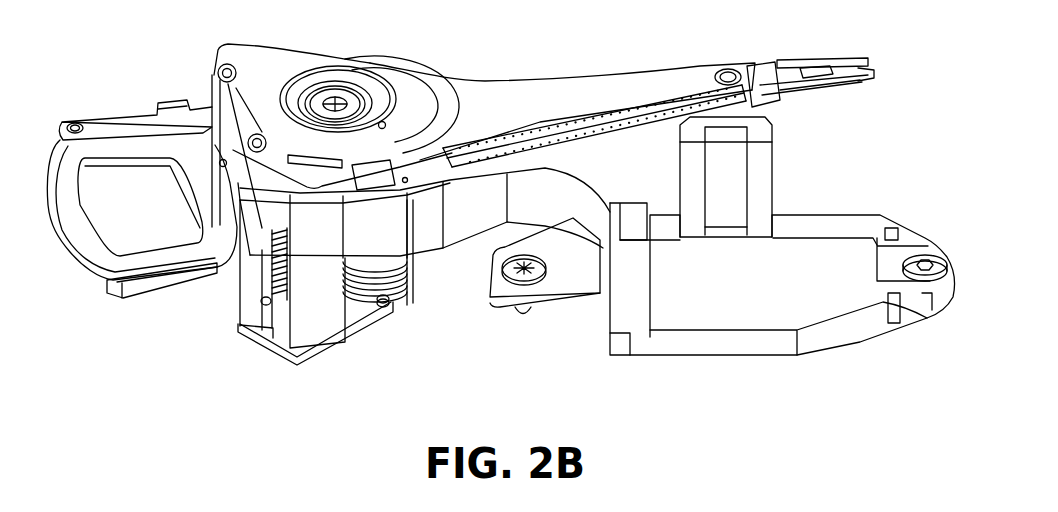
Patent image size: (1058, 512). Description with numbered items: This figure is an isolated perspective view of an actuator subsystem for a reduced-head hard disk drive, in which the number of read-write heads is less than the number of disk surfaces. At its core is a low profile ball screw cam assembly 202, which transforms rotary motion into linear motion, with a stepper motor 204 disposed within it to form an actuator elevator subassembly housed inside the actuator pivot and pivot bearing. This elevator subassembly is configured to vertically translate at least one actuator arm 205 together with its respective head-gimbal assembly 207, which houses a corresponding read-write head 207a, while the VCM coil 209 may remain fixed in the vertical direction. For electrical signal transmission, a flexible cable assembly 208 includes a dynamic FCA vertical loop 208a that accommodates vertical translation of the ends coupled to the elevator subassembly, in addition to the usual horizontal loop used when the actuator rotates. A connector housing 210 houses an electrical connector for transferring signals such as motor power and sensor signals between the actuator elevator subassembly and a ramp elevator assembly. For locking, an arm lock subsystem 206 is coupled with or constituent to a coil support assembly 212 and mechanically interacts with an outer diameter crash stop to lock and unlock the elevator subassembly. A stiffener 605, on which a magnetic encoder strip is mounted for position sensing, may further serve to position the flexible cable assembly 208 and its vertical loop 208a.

The low profile ball screw cam assembly 202 is at (389, 301).
The stepper motor 204 is at (336, 102).
The actuator arm 205 is at (492, 81).
The arm lock subsystem 206 is at (175, 110).
The head-gimbal assembly 207 is at (790, 70).
The read-write head 207a is at (864, 80).
The flexible cable assembly 208 is at (430, 233).
The FCA vertical loop 208a is at (393, 265).
The VCM coil 209 is at (72, 230).
The connector housing 210 is at (765, 190).
The coil support assembly 212 is at (212, 85).
The stiffener 605 is at (320, 333).